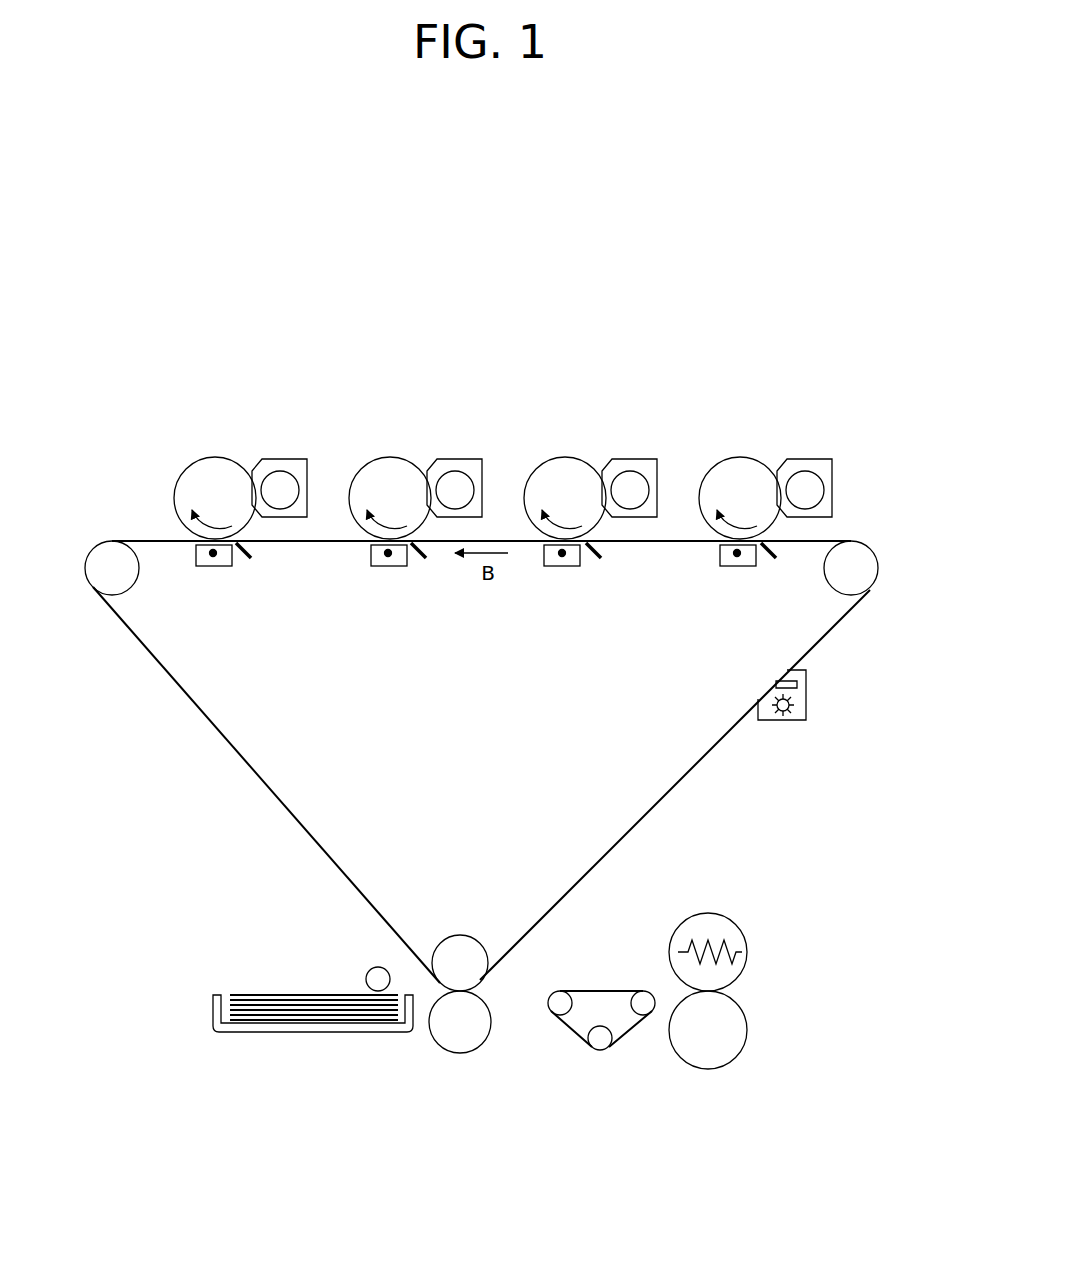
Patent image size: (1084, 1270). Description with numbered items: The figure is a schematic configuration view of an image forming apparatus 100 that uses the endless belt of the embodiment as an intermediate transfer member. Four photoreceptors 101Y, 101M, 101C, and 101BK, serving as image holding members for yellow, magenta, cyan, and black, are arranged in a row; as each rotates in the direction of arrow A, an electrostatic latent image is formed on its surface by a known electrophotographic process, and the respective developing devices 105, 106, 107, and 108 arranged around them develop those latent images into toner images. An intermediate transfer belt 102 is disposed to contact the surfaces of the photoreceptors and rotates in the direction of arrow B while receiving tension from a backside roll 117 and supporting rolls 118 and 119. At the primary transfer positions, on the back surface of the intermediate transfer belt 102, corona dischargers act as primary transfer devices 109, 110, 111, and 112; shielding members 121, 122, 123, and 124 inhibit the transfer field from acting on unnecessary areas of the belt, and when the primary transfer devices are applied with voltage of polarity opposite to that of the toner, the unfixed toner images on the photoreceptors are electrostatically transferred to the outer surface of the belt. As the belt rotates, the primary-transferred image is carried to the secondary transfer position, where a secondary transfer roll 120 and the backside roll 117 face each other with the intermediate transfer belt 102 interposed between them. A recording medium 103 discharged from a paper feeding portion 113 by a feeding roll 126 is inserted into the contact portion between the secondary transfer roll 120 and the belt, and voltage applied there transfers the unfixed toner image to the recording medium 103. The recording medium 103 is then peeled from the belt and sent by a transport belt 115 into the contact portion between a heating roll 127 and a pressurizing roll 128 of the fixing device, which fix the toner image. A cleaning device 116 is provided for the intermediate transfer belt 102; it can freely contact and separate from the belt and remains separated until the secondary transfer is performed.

The image forming apparatus 100 is at (617, 302).
The photoreceptor 101BK is at (216, 465).
The photoreceptor 101C is at (392, 468).
The photoreceptor 101M is at (567, 468).
The photoreceptor 101Y is at (742, 468).
The intermediate transfer belt 102 is at (688, 782).
The recording medium 103 is at (272, 992).
The developing device 105 is at (811, 460).
The developing device 106 is at (638, 460).
The developing device 107 is at (463, 460).
The developing device 108 is at (285, 458).
The primary transfer device 109 is at (726, 568).
The primary transfer device 110 is at (550, 568).
The primary transfer device 111 is at (377, 568).
The primary transfer device 112 is at (202, 568).
The paper feeding portion 113 is at (333, 1035).
The transport belt 115 is at (630, 1045).
The cleaning device 116 is at (800, 722).
The backside roll 117 is at (460, 942).
The supporting roll 118 is at (862, 592).
The supporting roll 119 is at (103, 540).
The secondary transfer roll 120 is at (466, 1052).
The shielding member 121 is at (771, 561).
The shielding member 122 is at (596, 561).
The shielding member 123 is at (421, 561).
The shielding member 124 is at (246, 561).
The feeding roll 126 is at (375, 968).
The heating roll 127 is at (722, 922).
The pressurizing roll 128 is at (726, 1066).